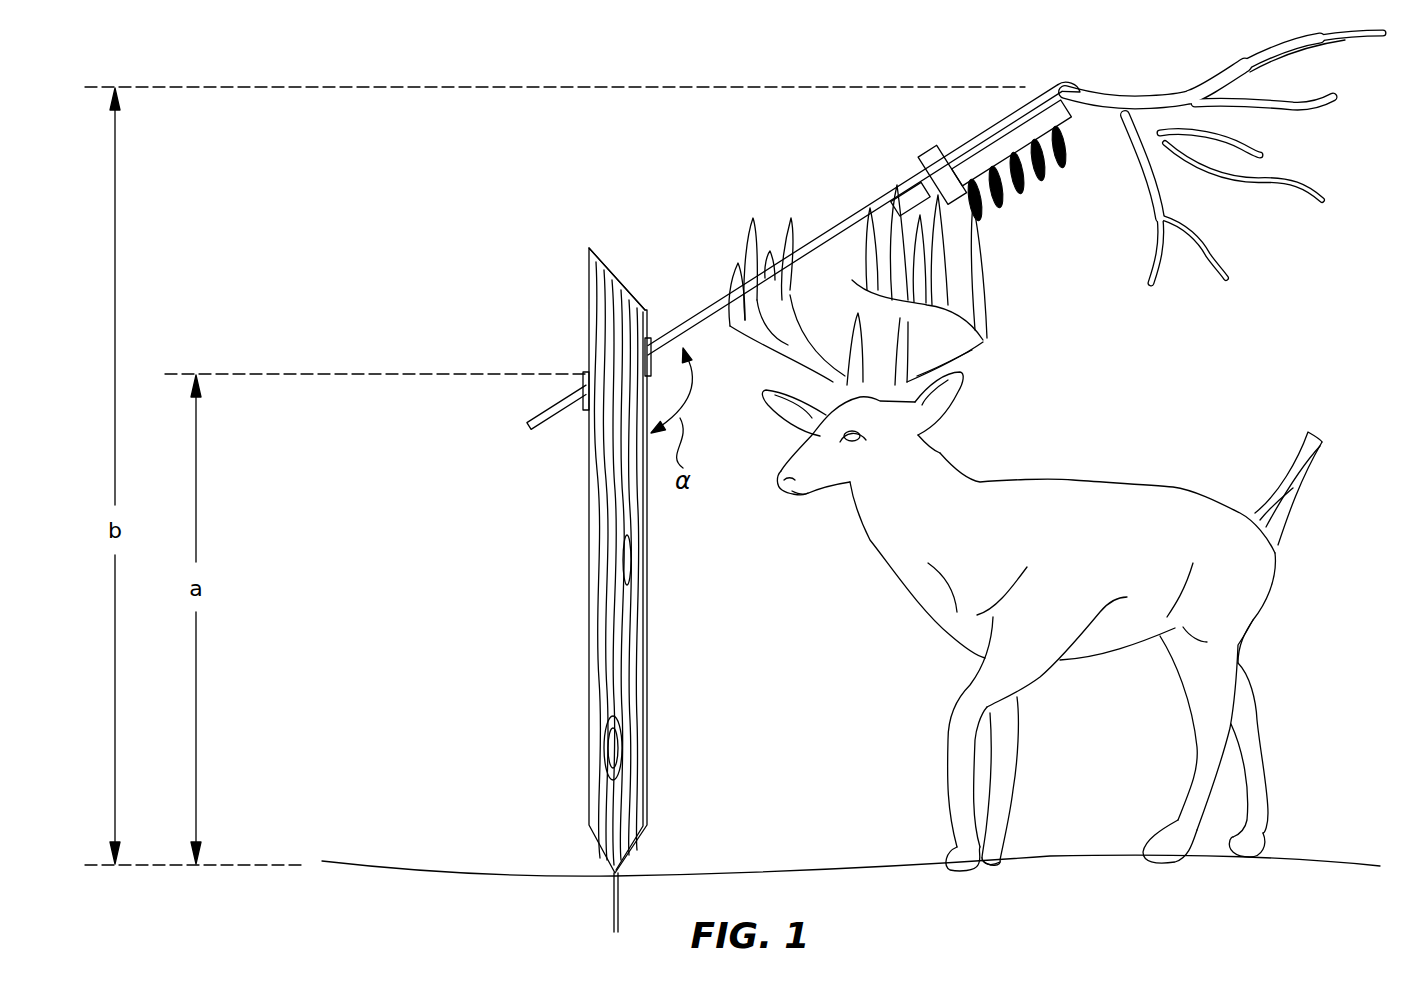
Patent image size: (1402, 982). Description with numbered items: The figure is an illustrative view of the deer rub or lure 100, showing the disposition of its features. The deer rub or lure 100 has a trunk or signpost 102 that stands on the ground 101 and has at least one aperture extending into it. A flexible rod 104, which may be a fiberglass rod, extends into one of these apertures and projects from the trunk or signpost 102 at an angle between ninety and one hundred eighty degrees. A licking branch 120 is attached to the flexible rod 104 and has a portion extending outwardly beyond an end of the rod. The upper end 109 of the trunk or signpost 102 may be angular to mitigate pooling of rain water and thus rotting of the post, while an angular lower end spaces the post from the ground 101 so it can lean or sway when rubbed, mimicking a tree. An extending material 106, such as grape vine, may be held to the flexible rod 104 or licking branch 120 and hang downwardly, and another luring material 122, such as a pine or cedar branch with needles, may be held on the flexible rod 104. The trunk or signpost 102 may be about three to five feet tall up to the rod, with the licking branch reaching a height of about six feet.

The deer rub or lure 100 is at (466, 322).
The ground 101 is at (418, 866).
The trunk or signpost 102 is at (610, 590).
The flexible rod 104 is at (550, 420).
The extending material 106 is at (873, 208).
The upper end 109 is at (592, 256).
The licking branch 120 is at (1140, 98).
The material 122 is at (985, 212).